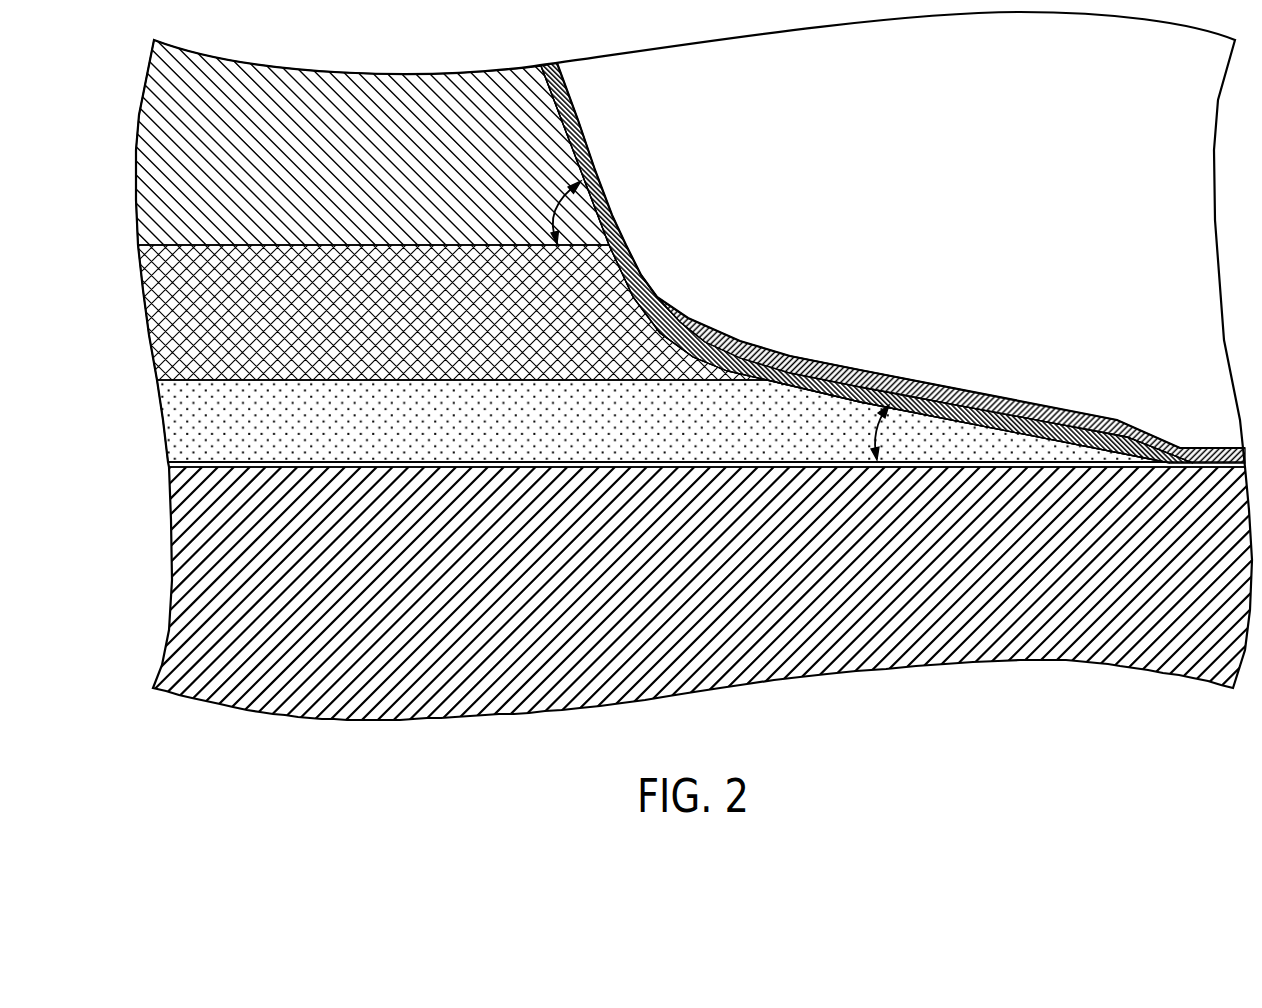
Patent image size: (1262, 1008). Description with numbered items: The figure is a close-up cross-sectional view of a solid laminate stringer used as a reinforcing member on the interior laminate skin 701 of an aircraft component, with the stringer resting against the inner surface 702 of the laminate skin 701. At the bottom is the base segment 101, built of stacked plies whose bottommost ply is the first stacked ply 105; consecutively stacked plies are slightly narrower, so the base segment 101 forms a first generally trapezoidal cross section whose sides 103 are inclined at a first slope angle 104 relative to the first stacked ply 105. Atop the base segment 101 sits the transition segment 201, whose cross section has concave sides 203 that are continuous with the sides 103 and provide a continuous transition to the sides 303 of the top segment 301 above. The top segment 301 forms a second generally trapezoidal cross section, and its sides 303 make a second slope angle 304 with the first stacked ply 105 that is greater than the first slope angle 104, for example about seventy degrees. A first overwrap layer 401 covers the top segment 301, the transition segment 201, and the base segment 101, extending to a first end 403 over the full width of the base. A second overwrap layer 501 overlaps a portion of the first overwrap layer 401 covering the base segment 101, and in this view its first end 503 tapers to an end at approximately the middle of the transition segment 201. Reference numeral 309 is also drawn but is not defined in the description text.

The base segment 101 is at (177, 430).
The sides 103 is at (957, 421).
The first slope angle 104 is at (868, 422).
The first stacked ply 105 is at (565, 461).
The transition segment 201 is at (158, 315).
The concave sides 203 is at (651, 313).
The top segment 301 is at (156, 172).
The sides 303 is at (560, 118).
The second slope angle 304 is at (553, 207).
The upper surface of buffer layer 309 is at (608, 466).
The first overwrap layer 401 is at (603, 186).
The first end 403 is at (1107, 437).
The second overwrap layer 501 is at (847, 365).
The first end 503 is at (648, 285).
The laminate skin 701 is at (183, 583).
The inner surface 702 is at (176, 468).